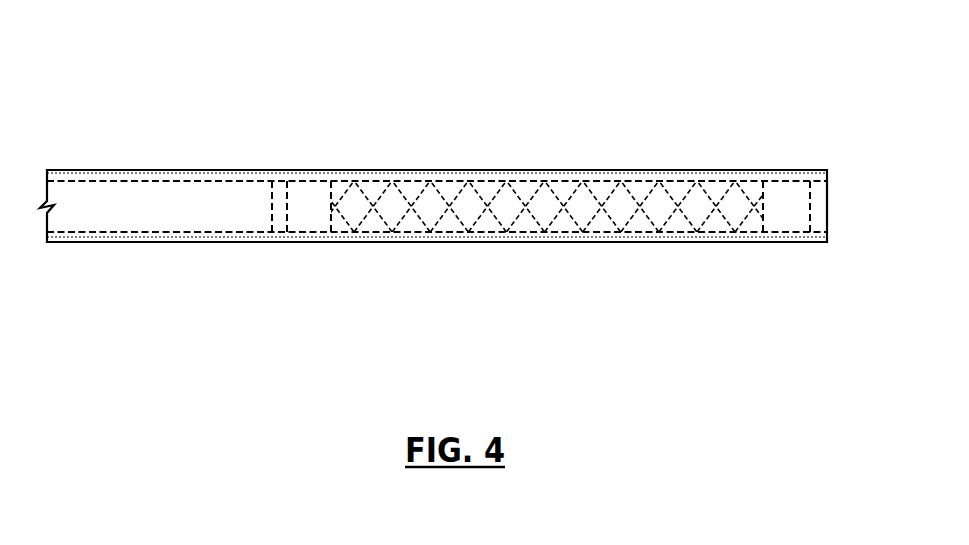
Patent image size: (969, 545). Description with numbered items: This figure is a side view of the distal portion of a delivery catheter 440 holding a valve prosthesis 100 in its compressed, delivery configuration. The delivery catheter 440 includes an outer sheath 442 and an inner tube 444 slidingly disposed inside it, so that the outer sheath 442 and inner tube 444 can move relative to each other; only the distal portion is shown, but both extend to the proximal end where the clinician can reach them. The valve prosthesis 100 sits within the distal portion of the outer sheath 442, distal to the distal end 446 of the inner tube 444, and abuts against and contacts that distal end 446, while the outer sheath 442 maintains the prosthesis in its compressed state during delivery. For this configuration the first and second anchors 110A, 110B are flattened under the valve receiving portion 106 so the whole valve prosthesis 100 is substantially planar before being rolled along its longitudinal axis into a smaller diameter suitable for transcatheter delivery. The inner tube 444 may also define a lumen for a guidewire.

The valve prosthesis 100 is at (605, 178).
The delivery catheter 440 is at (194, 145).
The outer sheath 442 is at (482, 170).
The inner tube 444 is at (168, 215).
The distal end of inner tube 446 is at (272, 200).
The second anchor 110B is at (307, 222).
The valve receiving portion 106 is at (598, 212).
The first anchor 110A is at (785, 210).